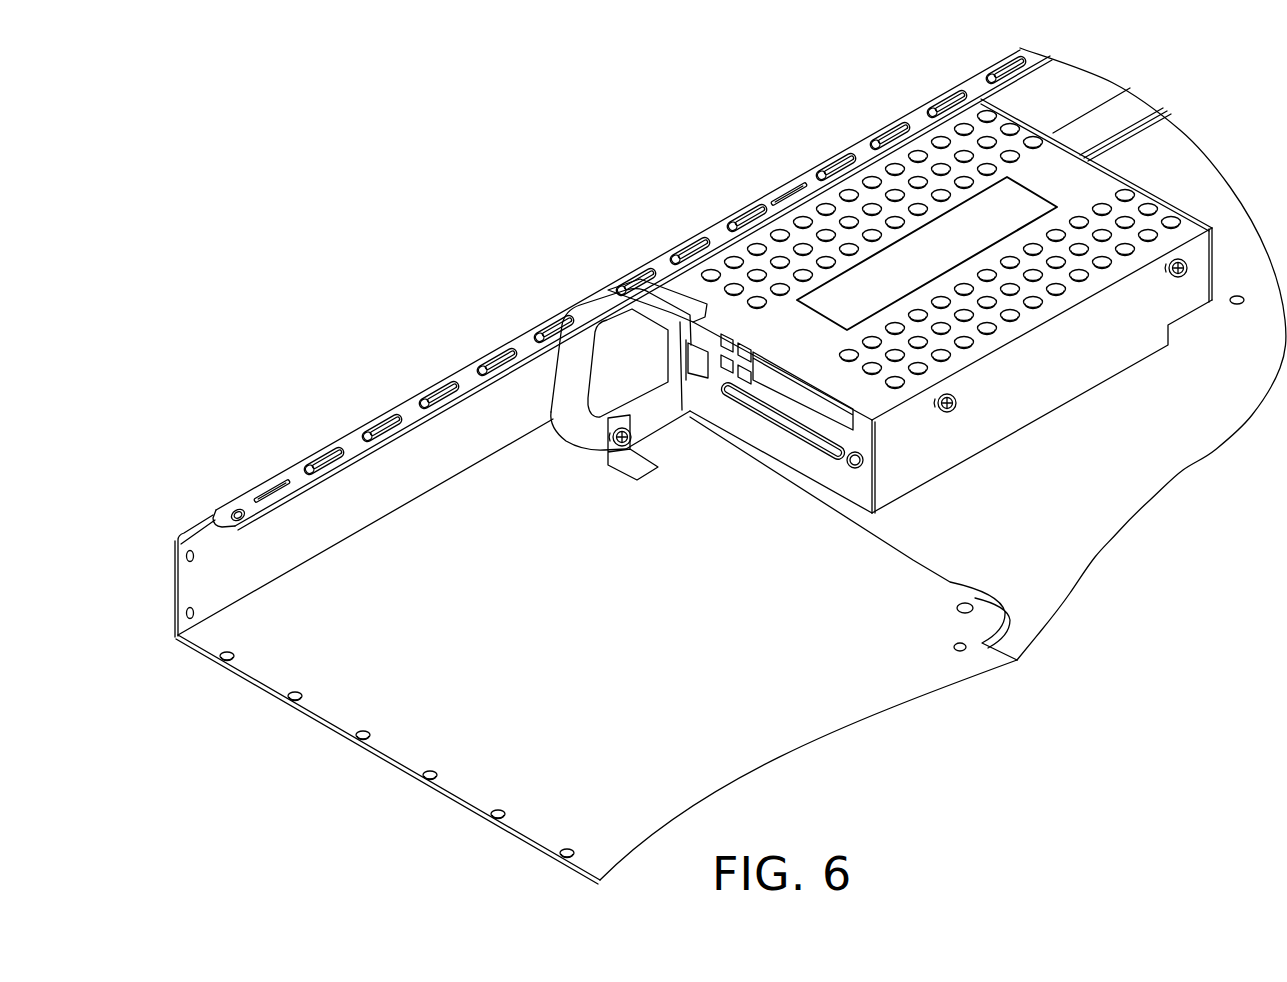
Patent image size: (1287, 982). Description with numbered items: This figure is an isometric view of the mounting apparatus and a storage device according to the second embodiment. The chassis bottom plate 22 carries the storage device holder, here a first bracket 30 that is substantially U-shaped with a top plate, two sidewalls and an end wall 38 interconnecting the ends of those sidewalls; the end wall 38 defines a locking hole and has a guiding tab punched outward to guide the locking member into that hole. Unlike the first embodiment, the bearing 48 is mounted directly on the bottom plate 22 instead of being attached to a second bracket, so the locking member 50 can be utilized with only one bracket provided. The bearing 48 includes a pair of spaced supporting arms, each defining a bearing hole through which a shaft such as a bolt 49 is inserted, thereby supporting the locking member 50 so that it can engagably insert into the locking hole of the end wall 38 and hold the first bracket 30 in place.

The bottom plate 22 is at (343, 702).
The first bracket 30 is at (1040, 383).
The end wall 38 is at (845, 477).
The bearing 48 is at (608, 458).
The bolt 49 is at (603, 430).
The locking member 50 is at (593, 325).